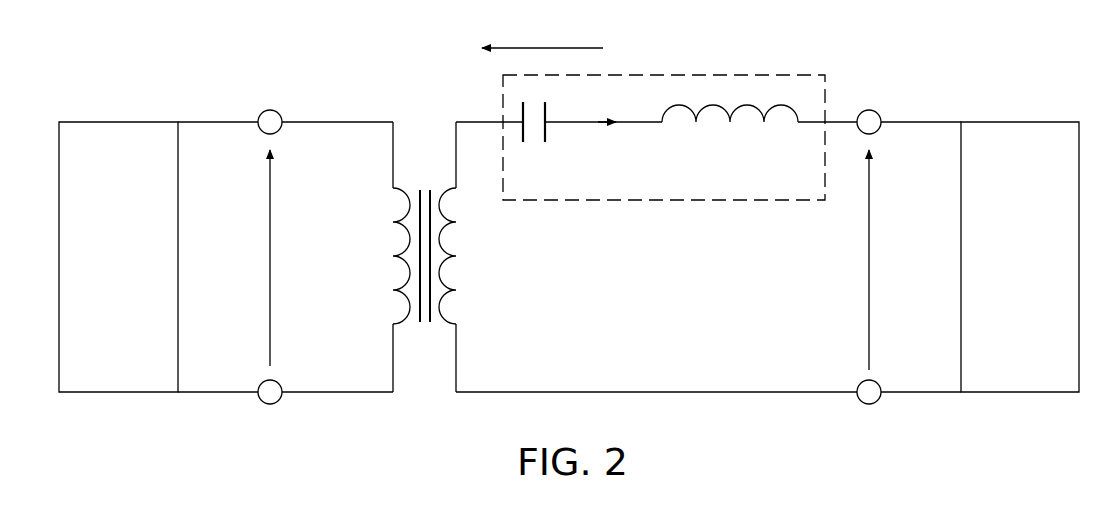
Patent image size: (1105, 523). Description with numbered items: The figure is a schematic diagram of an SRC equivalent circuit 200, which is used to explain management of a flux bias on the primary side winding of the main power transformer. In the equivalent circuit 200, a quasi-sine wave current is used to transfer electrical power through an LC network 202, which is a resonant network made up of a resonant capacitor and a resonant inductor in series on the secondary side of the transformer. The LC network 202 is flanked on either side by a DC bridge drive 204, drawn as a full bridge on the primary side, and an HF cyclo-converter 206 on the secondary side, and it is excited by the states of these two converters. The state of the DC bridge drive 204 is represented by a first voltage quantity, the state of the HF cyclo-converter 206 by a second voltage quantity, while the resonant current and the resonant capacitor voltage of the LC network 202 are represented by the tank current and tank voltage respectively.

The SRC equivalent circuit 200 is at (221, 66).
The LC network 202 is at (742, 74).
The DC bridge drive 204 is at (118, 257).
The HF cyclo-converter 206 is at (1020, 257).